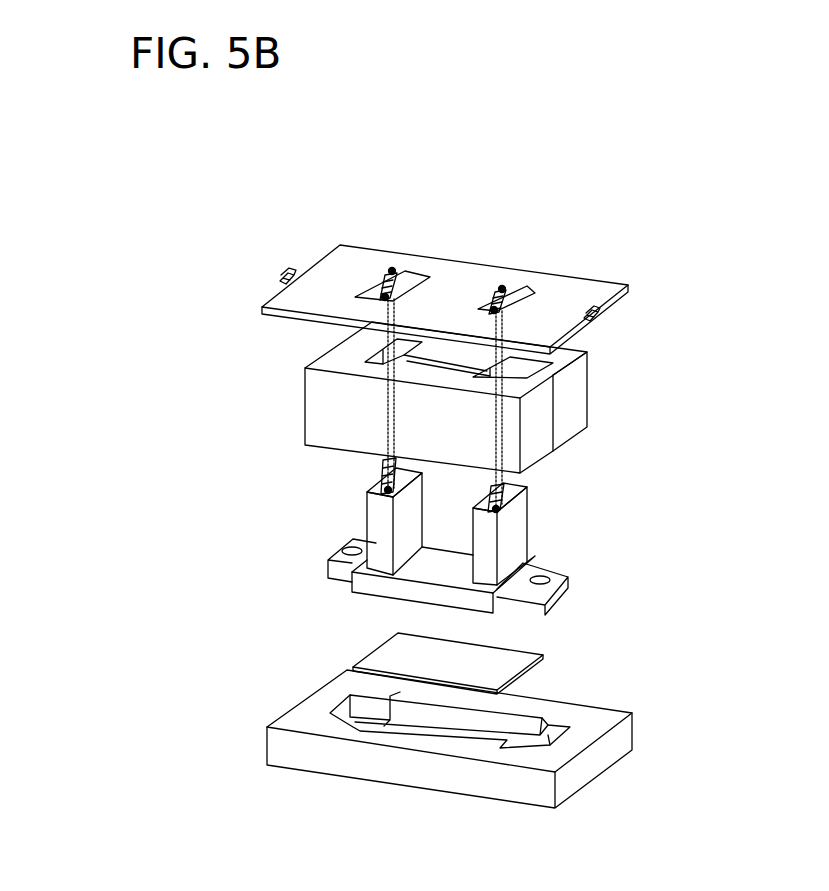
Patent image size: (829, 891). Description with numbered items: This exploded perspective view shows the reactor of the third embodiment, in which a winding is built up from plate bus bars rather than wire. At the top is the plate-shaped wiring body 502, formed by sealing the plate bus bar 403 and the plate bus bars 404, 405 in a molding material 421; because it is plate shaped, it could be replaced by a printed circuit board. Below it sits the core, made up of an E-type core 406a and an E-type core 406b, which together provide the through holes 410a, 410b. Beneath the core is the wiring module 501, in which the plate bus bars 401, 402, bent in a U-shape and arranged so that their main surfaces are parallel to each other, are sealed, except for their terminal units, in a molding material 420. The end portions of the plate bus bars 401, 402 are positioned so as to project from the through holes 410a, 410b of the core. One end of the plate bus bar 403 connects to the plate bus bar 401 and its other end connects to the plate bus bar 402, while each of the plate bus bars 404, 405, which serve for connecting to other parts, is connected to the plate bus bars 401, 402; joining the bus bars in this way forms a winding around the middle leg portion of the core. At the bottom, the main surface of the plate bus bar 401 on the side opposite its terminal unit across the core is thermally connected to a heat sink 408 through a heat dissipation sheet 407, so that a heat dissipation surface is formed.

The wiring body 502 is at (690, 150).
The molding material 421 is at (583, 303).
The plate bus bar 403 is at (475, 307).
The plate bus bar 404 is at (392, 270).
The plate bus bar 405 is at (510, 298).
The through hole 410a is at (367, 360).
The through hole 410b is at (545, 355).
The E-type core 406a is at (538, 450).
The E-type core 406b is at (586, 405).
The wiring module 501 is at (117, 417).
The plate bus bar 401 is at (385, 461).
The plate bus bar 402 is at (378, 490).
The molding material 420 is at (377, 547).
The heat dissipation sheet 407 is at (493, 668).
The heat sink 408 is at (600, 747).